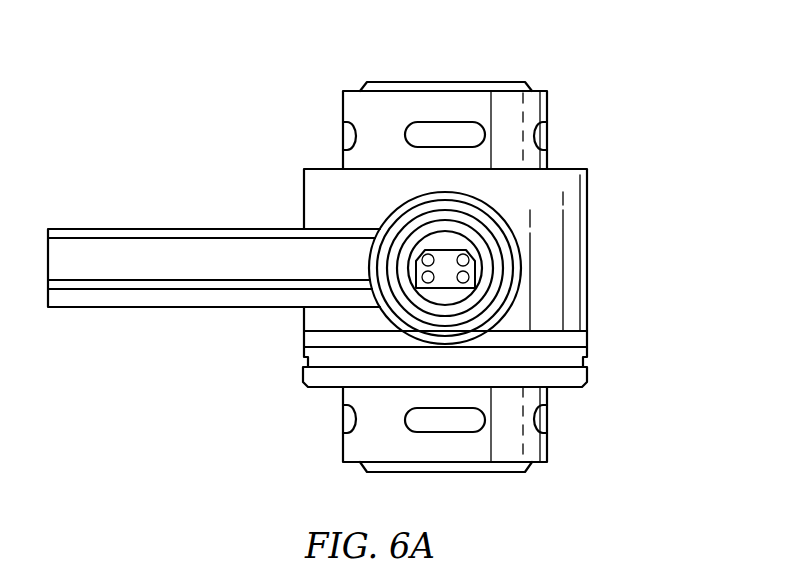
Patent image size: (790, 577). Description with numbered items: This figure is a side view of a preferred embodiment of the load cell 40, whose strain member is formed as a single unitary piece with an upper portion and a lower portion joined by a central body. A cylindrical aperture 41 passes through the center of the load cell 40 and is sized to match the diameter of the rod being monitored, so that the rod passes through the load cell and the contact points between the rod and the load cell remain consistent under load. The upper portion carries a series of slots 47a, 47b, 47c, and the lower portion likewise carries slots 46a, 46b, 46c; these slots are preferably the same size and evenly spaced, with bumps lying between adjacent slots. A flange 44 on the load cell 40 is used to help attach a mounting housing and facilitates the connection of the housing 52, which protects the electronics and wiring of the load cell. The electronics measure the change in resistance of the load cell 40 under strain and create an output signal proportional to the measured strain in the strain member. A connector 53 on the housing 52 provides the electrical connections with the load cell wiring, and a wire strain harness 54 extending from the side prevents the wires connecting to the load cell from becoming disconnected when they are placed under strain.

The load cell 40 is at (618, 45).
The cylindrical aperture 41 is at (479, 62).
The flange 44 is at (588, 382).
The slot 46a is at (440, 422).
The slot 46b is at (347, 416).
The slot 46c is at (548, 416).
The slot 47a is at (441, 138).
The slot 47b is at (345, 135).
The slot 47c is at (548, 134).
The housing 52 is at (572, 245).
The connector 53 is at (441, 258).
The wire strain harness 54 is at (146, 229).